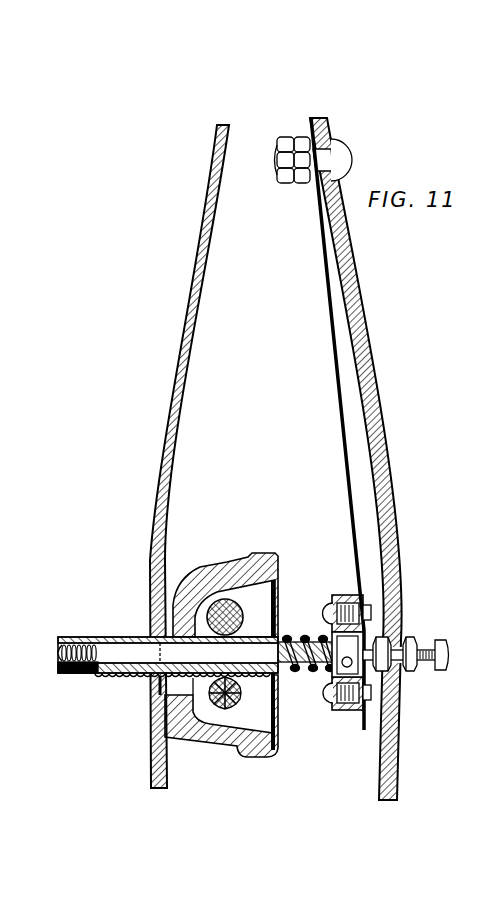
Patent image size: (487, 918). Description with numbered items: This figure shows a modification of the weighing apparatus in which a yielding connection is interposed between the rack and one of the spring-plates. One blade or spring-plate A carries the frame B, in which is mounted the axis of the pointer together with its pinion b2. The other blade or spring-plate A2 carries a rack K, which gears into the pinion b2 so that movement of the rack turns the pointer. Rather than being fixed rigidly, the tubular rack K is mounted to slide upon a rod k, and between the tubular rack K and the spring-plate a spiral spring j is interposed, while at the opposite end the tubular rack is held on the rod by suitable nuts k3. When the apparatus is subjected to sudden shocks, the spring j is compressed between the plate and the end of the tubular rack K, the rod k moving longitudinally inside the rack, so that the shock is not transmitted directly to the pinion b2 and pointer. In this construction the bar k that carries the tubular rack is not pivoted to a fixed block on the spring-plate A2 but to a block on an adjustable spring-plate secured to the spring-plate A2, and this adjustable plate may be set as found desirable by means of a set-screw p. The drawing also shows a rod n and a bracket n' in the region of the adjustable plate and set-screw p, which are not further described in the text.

The blade or spring-plate A is at (177, 381).
The other blade or spring-plate A2 is at (368, 381).
The rod n is at (331, 424).
The bracket n' is at (347, 674).
The frame B is at (221, 655).
The rod k is at (168, 666).
The nuts k3 is at (78, 637).
The rack K is at (182, 689).
The pinion b2 is at (242, 696).
The spiral spring j is at (306, 667).
The set-screw p is at (408, 636).